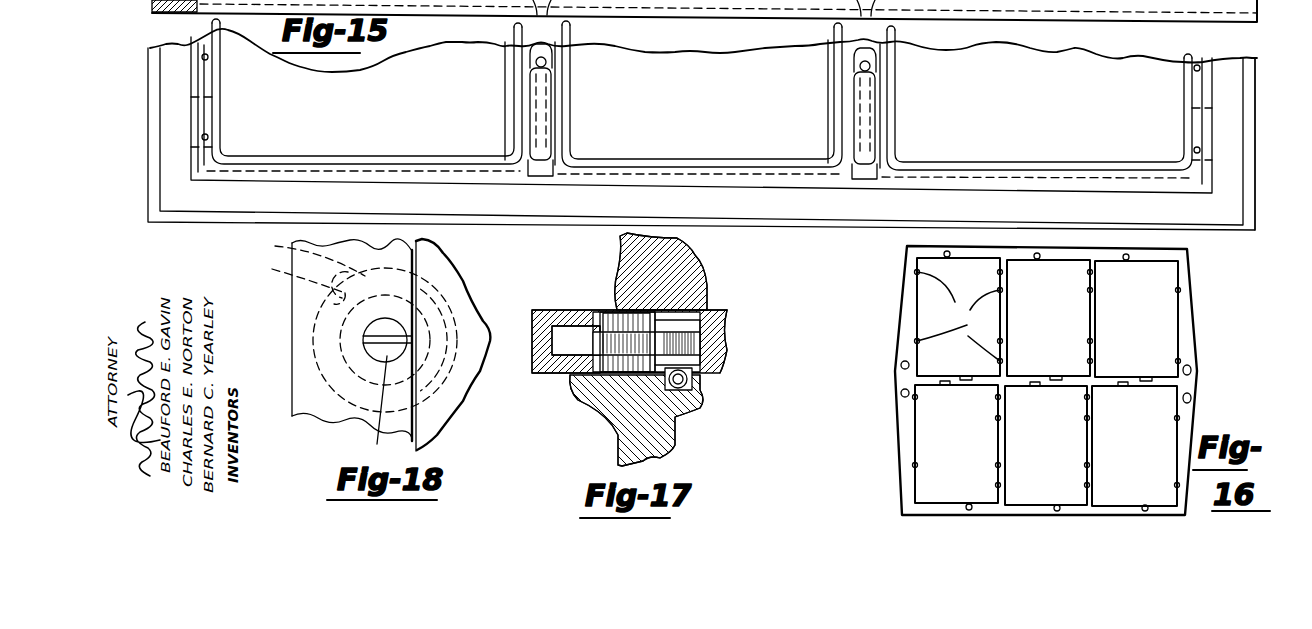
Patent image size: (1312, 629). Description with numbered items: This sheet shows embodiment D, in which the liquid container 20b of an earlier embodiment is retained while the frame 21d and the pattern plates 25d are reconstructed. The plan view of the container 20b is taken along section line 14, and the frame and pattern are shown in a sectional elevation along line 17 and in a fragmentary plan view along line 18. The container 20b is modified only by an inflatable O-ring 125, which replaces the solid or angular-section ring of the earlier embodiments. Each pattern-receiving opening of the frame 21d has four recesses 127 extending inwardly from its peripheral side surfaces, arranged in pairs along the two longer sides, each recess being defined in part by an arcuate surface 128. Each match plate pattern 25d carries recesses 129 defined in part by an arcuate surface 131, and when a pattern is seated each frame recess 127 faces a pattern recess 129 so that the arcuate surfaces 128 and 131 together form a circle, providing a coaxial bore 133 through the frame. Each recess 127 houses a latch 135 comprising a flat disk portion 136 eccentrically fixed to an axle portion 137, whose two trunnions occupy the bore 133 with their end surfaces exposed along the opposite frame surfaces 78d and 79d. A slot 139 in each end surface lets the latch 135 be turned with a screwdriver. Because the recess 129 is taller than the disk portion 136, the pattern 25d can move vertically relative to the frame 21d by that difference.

In FIG. 15, the section line 14- 14 is at (1287, 40).
In FIG. 18, the section line 17- 17 is at (502, 303).
In FIG. 17, the section line 18- 18 is at (750, 349).
In FIG. 15, the container 20b is at (1255, 153).
In FIG. 17, the container 20b is at (677, 436).
In FIG. 18, the frame 21d is at (358, 424).
In FIG. 17, the frame 21d is at (547, 310).
In FIG. 16, the frame 21d is at (1196, 313).
In FIG. 18, the pattern plate 25d is at (485, 368).
In FIG. 17, the pattern plate 25d is at (728, 311).
In FIG. 18, the frame surface 78d is at (396, 267).
In FIG. 17, the frame surface 78d is at (568, 310).
In FIG. 17, the frame surface 79d is at (537, 380).
In FIG. 17, the inflatable O-ring 125 is at (693, 378).
In FIG. 18, the recess 127 is at (306, 264).
In FIG. 17, the recess 127 is at (585, 338).
In FIG. 16, the recess 127 is at (958, 316).
In FIG. 18, the arcuate surface 128 is at (297, 280).
In FIG. 18, the recess 129 is at (433, 300).
In FIG. 17, the recess 129 is at (700, 280).
In FIG. 18, the arcuate surface 131 is at (421, 293).
In FIG. 17, the bore 133 is at (612, 312).
In FIG. 18, the latch 135 is at (365, 376).
In FIG. 17, the latch 135 is at (592, 343).
In FIG. 18, the disk portion 136 is at (448, 386).
In FIG. 17, the disk portion 136 is at (658, 328).
In FIG. 18, the axle portion 137 is at (372, 409).
In FIG. 17, the axle portion 137 is at (690, 256).
In FIG. 18, the slot 139 is at (373, 343).
In FIG. 17, the slot 139 is at (653, 296).